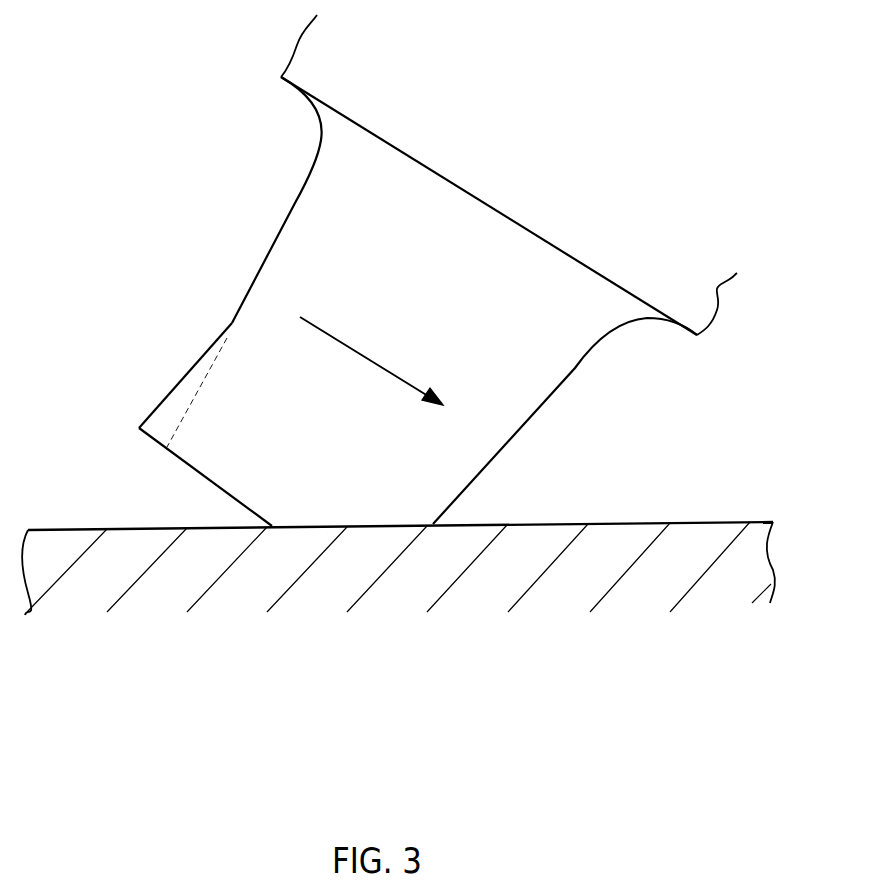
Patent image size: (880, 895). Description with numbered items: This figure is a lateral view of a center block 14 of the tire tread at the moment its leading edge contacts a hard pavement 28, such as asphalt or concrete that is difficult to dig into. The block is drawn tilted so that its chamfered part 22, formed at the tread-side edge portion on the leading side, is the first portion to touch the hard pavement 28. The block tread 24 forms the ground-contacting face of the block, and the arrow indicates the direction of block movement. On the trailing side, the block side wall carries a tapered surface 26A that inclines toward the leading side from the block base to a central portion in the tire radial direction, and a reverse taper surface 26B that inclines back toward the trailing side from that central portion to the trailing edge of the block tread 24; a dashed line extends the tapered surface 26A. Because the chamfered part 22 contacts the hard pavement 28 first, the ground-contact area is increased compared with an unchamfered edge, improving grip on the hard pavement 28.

The center block 14 is at (258, 255).
The chamfered part 22 is at (370, 527).
The block tread 24 is at (180, 462).
The tapered surface 26A is at (293, 202).
The reverse taper surface 26B is at (168, 395).
The hard pavement 28 is at (620, 522).